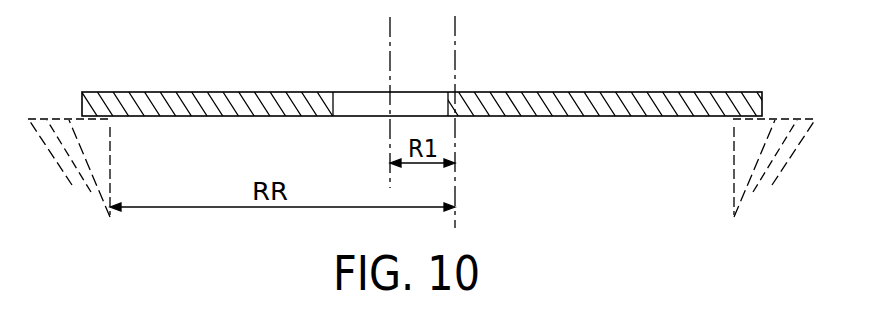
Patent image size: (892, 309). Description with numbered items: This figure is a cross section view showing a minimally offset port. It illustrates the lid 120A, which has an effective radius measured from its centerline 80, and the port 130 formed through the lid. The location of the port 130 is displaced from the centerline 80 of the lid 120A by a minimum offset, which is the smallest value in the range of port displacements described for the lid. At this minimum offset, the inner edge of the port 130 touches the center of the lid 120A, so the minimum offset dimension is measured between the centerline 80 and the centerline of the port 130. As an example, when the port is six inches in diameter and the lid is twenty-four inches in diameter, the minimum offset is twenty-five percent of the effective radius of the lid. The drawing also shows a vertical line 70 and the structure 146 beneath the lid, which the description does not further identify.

The central axis 70 is at (392, 41).
The centerline 80 is at (457, 41).
The lid 120A is at (592, 92).
The port 130 is at (337, 107).
The mounting structure 146 is at (111, 153).